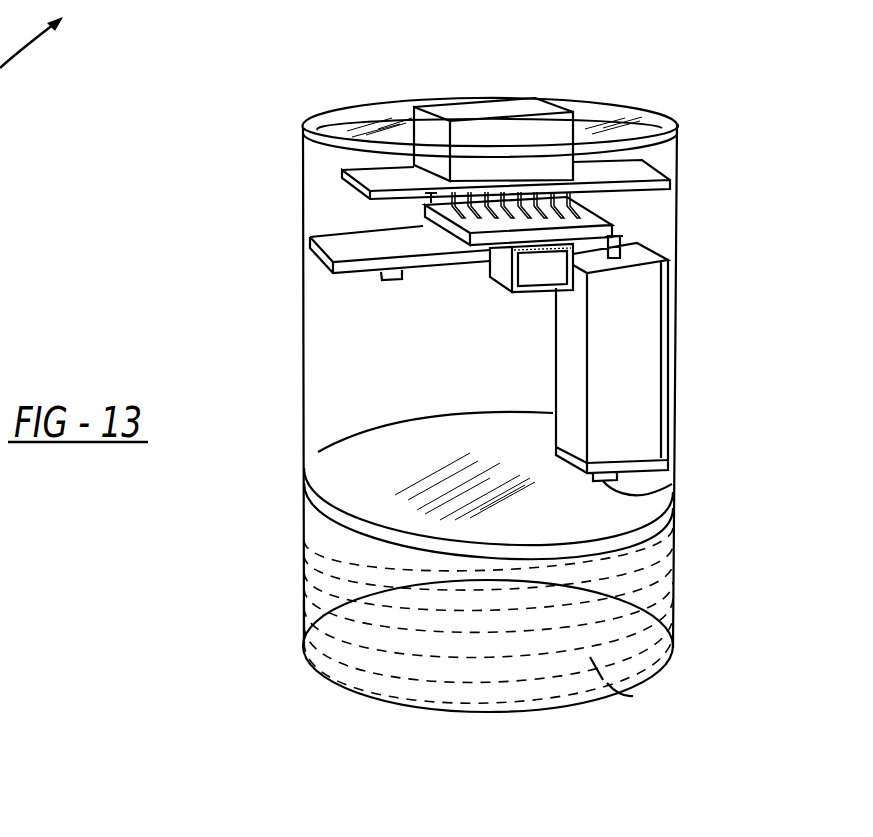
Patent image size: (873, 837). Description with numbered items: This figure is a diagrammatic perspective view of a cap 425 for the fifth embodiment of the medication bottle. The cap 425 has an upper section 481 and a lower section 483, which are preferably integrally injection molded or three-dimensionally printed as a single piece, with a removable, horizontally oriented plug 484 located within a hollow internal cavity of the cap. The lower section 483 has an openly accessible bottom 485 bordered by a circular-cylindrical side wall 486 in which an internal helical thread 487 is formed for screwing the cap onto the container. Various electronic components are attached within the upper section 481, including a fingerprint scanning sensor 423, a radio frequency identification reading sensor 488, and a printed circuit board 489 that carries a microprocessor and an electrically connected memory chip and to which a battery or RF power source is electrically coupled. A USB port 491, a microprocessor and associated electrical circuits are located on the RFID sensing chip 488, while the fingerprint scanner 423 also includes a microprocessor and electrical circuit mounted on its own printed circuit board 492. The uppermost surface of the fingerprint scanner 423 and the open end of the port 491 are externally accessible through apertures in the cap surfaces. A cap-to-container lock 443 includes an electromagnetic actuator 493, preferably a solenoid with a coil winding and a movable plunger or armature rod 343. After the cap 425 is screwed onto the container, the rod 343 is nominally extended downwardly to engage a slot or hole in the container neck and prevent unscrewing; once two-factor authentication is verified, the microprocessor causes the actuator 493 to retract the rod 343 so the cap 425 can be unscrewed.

The fingerprint scanning sensor 423 is at (486, 108).
The printed circuit board 492 is at (368, 178).
The printed circuit board 489 is at (343, 240).
The radio frequency identification (RFID) reading sensor 488 is at (583, 218).
The cap 425 is at (210, 280).
The USB port 491 is at (558, 287).
The electromagnetic actuator 493 is at (620, 373).
The cap-to-container lock 443 is at (712, 393).
The upper section 481 is at (303, 313).
The armature rod 343 is at (672, 484).
The plug 484 is at (322, 519).
The circular-cylindrical side wall 486 is at (672, 573).
The lower section 483 is at (303, 588).
The bottom 485 is at (378, 699).
The internal helical thread 487 is at (638, 694).